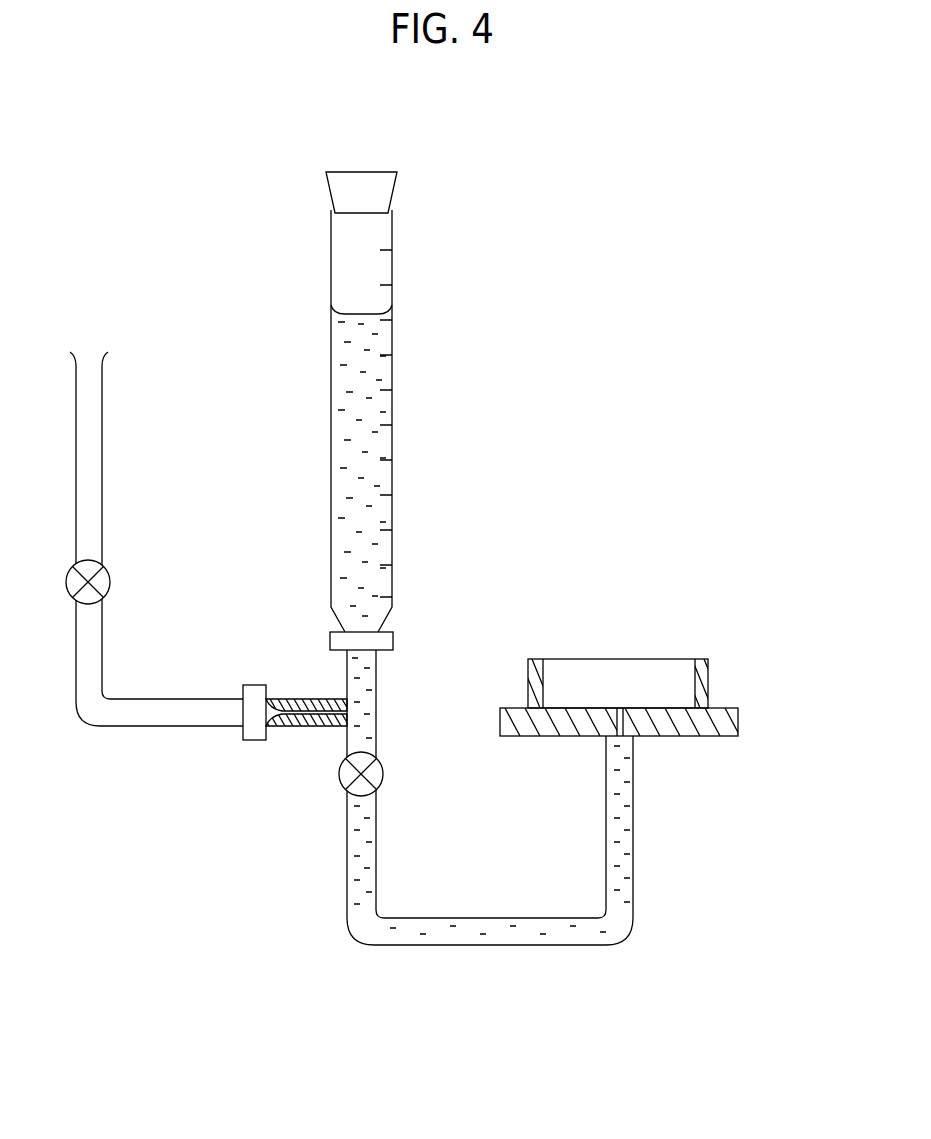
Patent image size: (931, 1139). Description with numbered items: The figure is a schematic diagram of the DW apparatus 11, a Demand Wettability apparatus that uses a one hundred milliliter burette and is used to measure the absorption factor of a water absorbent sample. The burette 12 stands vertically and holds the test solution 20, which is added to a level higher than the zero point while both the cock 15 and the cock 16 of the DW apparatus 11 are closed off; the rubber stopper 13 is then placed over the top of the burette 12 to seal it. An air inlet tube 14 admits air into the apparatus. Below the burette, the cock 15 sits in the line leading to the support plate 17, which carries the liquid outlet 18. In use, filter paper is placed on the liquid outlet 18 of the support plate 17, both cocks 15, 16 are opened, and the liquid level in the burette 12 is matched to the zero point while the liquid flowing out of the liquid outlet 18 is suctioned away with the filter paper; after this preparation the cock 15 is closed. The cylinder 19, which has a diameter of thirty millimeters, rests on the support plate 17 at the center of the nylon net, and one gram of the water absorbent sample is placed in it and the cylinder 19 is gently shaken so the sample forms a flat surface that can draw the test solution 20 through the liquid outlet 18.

The DW apparatus 11 is at (548, 280).
The burette 12 is at (331, 262).
The rubber stopper 13 is at (364, 187).
The air inlet tube 14 is at (308, 724).
The cock 15 is at (378, 774).
The cock 16 is at (109, 582).
The support plate 17 is at (694, 737).
The liquid outlet 18 is at (619, 708).
The cylinder 19 is at (709, 680).
The test solution 20 is at (352, 414).